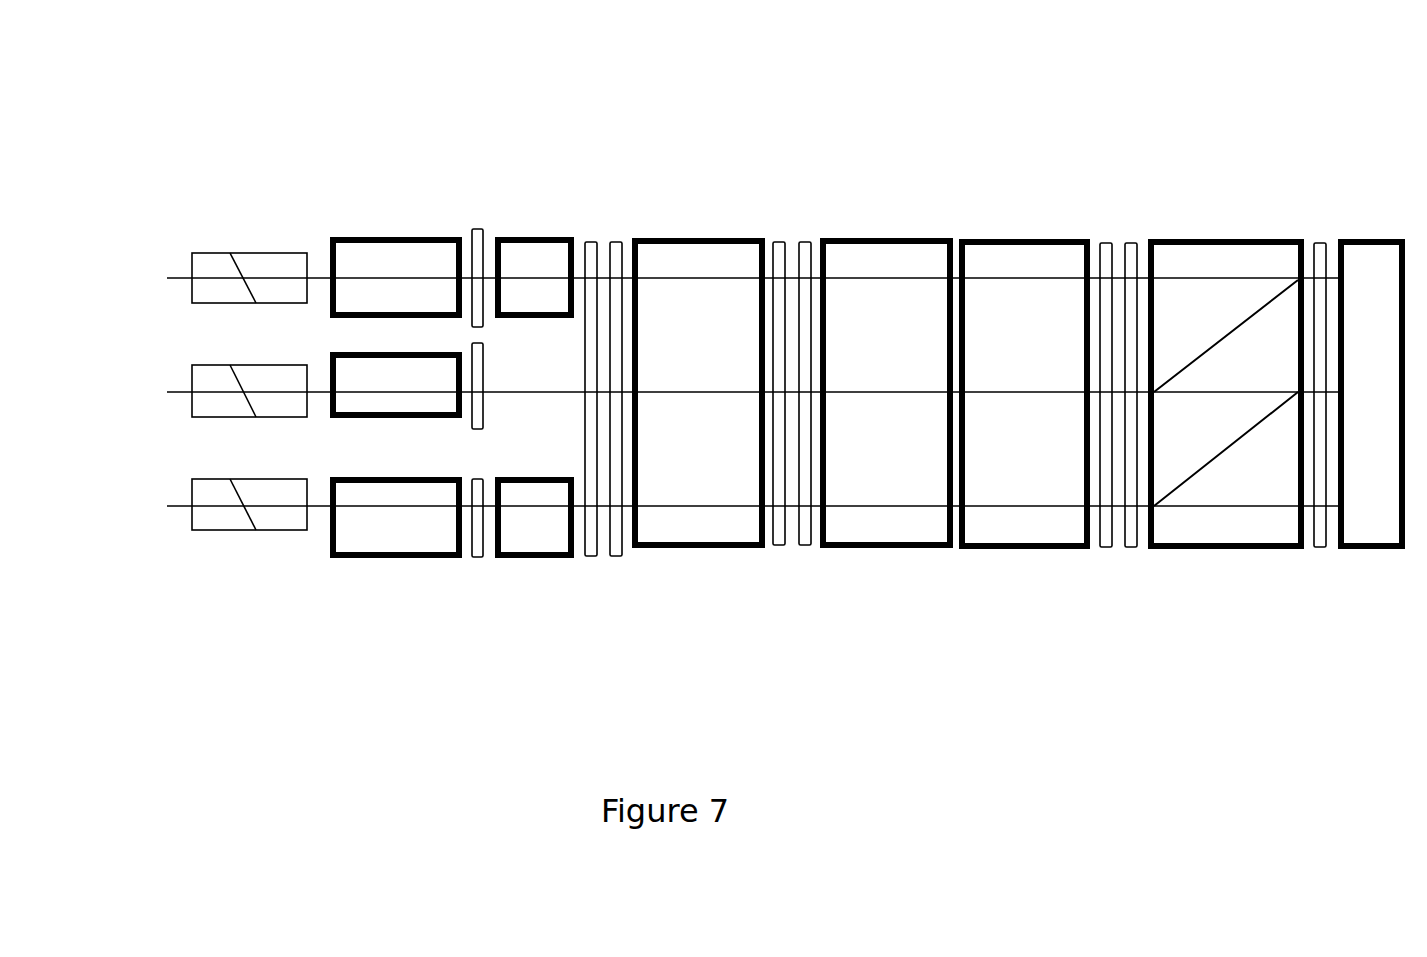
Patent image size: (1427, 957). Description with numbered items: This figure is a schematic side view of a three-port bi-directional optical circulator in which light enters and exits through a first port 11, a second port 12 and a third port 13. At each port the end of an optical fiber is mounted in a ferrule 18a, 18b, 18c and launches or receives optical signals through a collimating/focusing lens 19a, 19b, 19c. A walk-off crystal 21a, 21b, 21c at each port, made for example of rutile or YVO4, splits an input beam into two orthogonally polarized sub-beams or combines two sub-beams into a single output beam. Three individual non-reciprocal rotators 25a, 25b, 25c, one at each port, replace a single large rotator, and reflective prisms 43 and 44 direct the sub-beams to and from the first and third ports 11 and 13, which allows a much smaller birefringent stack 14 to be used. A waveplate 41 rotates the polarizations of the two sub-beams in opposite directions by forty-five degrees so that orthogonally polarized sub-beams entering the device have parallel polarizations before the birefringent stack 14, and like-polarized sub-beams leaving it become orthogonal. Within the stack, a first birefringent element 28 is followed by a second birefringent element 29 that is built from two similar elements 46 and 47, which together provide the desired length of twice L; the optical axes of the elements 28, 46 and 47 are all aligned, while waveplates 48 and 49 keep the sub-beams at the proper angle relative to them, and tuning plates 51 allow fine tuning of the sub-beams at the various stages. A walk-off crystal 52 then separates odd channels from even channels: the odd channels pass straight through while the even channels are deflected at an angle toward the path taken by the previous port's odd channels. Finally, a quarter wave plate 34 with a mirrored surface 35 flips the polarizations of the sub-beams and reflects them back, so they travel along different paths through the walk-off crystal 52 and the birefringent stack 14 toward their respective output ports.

The first port 11 is at (231, 203).
The second port 12 is at (167, 353).
The third port 13 is at (244, 568).
The birefringent stack 14 is at (786, 153).
The ferrule 18a is at (218, 265).
The ferrule 18b is at (205, 403).
The ferrule 18c is at (206, 518).
The collimating/focusing lens 19a is at (268, 265).
The collimating/focusing lens 19b is at (257, 378).
The collimating/focusing lens 19c is at (268, 518).
The walk-off crystal 21a is at (408, 252).
The walk-off crystal 21b is at (372, 372).
The walk-off crystal 21c is at (372, 543).
The non-reciprocal rotator 25a is at (472, 227).
The non-reciprocal rotator 25b is at (470, 417).
The non-reciprocal rotator 25c is at (472, 558).
The first birefringent element 28 is at (686, 240).
The second birefringent element 29 is at (938, 227).
The quarter wave plate 34 is at (1327, 245).
The mirrored surface 35 is at (1376, 522).
The waveplate 41 is at (588, 243).
The reflective prism 43 is at (523, 250).
The reflective prism 44 is at (522, 530).
The birefringent element 46 is at (885, 518).
The birefringent element 47 is at (1035, 240).
The waveplate 48 is at (787, 545).
The waveplate 49 is at (1138, 240).
The tuning plate 51 is at (623, 545).
The walk-off crystal 52 is at (1200, 558).